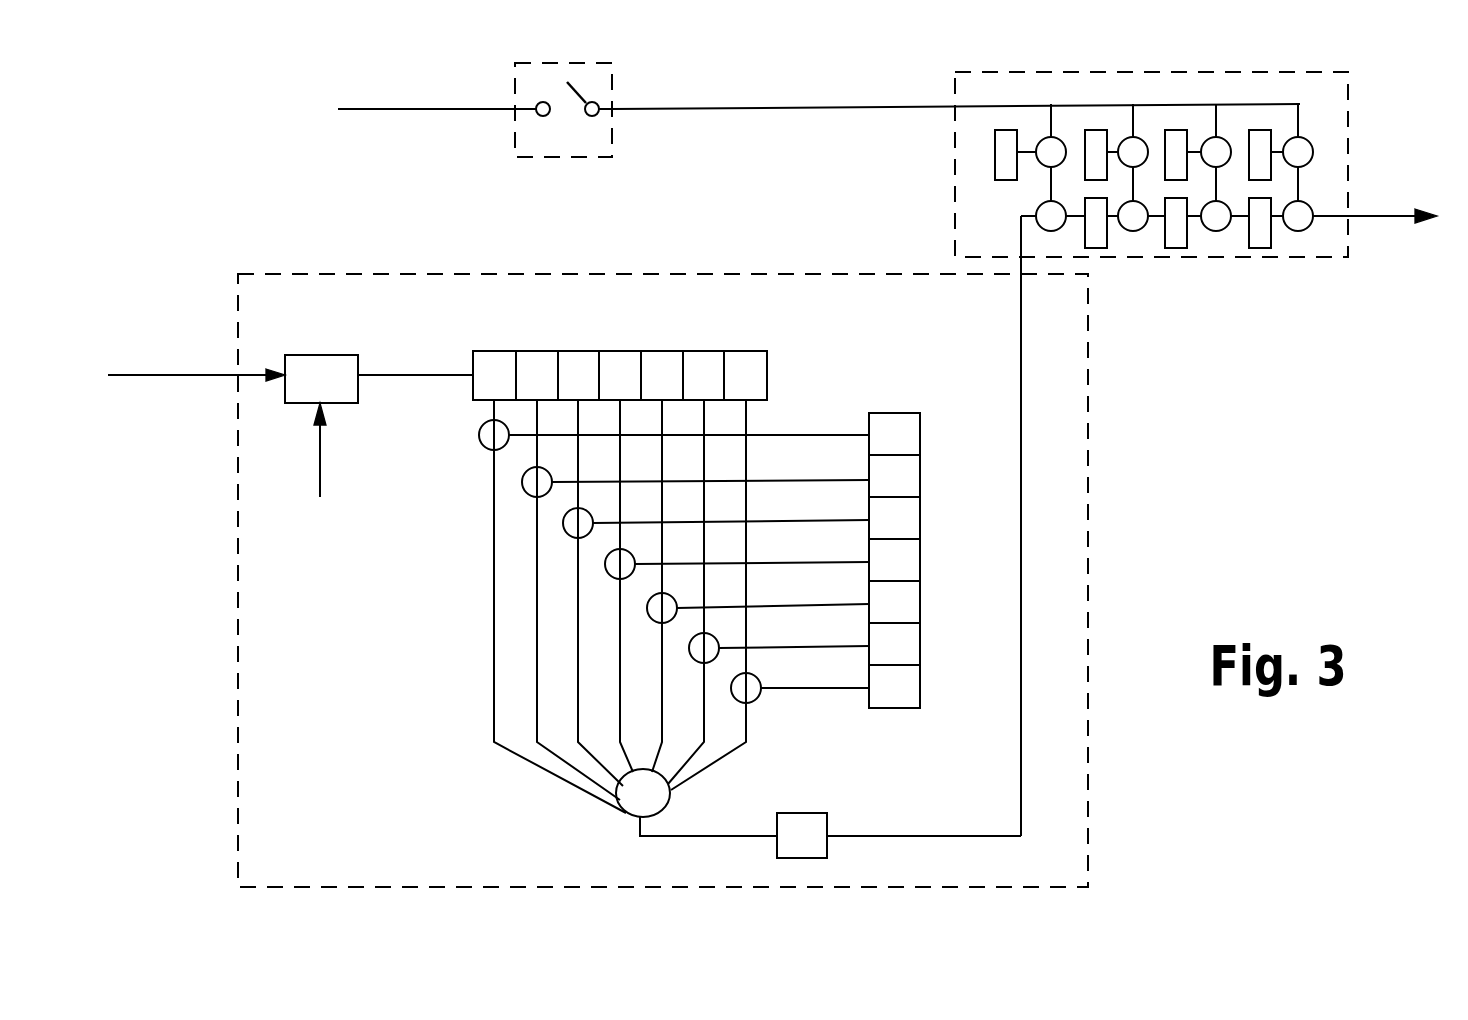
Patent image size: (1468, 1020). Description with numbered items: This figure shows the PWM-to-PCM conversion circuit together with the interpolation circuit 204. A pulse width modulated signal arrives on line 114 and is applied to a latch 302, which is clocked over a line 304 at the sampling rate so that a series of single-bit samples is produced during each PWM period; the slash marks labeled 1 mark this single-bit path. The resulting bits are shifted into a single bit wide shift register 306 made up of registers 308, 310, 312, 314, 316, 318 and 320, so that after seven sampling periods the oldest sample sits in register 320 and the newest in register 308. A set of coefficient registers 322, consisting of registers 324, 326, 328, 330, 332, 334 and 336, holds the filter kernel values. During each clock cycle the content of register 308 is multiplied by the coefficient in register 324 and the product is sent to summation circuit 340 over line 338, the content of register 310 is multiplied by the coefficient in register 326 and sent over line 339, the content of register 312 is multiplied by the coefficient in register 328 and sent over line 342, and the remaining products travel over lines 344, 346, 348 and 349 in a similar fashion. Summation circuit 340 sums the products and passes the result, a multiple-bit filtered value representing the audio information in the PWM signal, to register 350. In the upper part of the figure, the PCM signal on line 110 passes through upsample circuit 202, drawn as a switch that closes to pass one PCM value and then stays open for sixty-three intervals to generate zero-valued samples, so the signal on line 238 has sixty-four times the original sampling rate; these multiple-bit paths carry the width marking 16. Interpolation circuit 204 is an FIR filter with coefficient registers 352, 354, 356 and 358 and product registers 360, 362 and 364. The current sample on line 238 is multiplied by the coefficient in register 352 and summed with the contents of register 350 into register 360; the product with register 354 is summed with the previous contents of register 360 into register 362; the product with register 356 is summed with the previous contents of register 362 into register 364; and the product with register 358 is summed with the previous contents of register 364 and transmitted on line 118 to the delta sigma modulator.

The line 110 is at (358, 109).
The 16-bit bus width indicator 16 is at (458, 90).
The upsample circuit 202 is at (613, 83).
The line 238 is at (745, 108).
The interpolation circuit 204 is at (1350, 93).
The coefficient register 352 is at (1004, 130).
The coefficient register 354 is at (1103, 130).
The coefficient register 356 is at (1184, 130).
The coefficient register 358 is at (1268, 130).
The product register 360 is at (1107, 236).
The product register 362 is at (1187, 236).
The product register 364 is at (1271, 236).
The line 118 is at (1405, 212).
The line 114 is at (143, 375).
The 1-bit width indicator 1 is at (217, 357).
The latch 302 is at (300, 355).
The line 304 is at (320, 482).
The single bit wide shift register 306 is at (629, 339).
The register 308 is at (479, 351).
The register 310 is at (522, 351).
The register 312 is at (564, 351).
The register 314 is at (605, 351).
The register 316 is at (647, 351).
The register 318 is at (689, 351).
The register 320 is at (751, 361).
The line 338 is at (494, 516).
The line 339 is at (537, 563).
The line 342 is at (578, 598).
The multiplier 344 is at (620, 632).
The multiplier 346 is at (662, 672).
The multiplier 348 is at (704, 703).
The multiplier 349 is at (746, 741).
The coefficient registers 322 is at (903, 558).
The coefficient register 324 is at (868, 431).
The coefficient register 326 is at (868, 475).
The coefficient register 328 is at (868, 515).
The coefficient register 330 is at (868, 556).
The coefficient register 332 is at (868, 601).
The coefficient register 334 is at (868, 643).
The coefficient register 336 is at (867, 684).
The summation circuit 340 is at (636, 820).
The register 350 is at (797, 813).